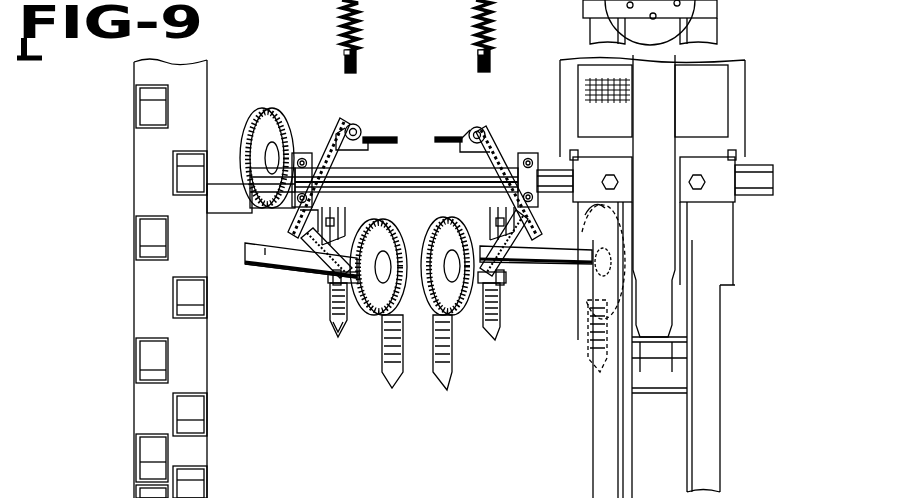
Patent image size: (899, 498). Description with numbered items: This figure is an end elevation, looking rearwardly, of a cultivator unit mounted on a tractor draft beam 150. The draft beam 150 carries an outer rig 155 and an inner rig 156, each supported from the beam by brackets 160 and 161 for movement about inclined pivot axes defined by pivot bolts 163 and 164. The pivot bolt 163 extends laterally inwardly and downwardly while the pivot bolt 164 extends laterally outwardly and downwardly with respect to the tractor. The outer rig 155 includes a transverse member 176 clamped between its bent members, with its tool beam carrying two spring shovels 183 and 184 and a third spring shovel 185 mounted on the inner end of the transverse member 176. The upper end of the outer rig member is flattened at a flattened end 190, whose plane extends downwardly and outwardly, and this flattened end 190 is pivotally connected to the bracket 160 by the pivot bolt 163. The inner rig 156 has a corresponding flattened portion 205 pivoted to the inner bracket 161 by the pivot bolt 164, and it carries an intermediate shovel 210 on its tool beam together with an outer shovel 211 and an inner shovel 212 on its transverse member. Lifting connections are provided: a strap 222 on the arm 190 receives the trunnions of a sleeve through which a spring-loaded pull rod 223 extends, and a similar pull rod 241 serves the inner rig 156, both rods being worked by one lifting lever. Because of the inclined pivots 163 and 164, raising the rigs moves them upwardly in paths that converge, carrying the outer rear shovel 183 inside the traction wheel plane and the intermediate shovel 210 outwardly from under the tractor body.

The draft beam 150 is at (404, 177).
The outer rig 155 is at (322, 287).
The inner rig 156 is at (476, 321).
The bracket 160 is at (306, 153).
The bracket 161 is at (514, 140).
The pivot bolt 163 is at (283, 221).
The pivot bolt 164 is at (530, 265).
The transverse member 176 is at (265, 263).
The spring shovel 183 is at (288, 268).
The spring shovel 184 is at (340, 322).
The spring shovel 185 is at (392, 389).
The flattened end 190 is at (283, 238).
The flattened portion 205 is at (505, 268).
The intermediate shovel 210 is at (500, 340).
The outer shovel 211 is at (447, 391).
The inner shovel 212 is at (567, 315).
The strap 222 is at (380, 143).
The pull rod 223 is at (368, 118).
The pull rod 241 is at (478, 143).